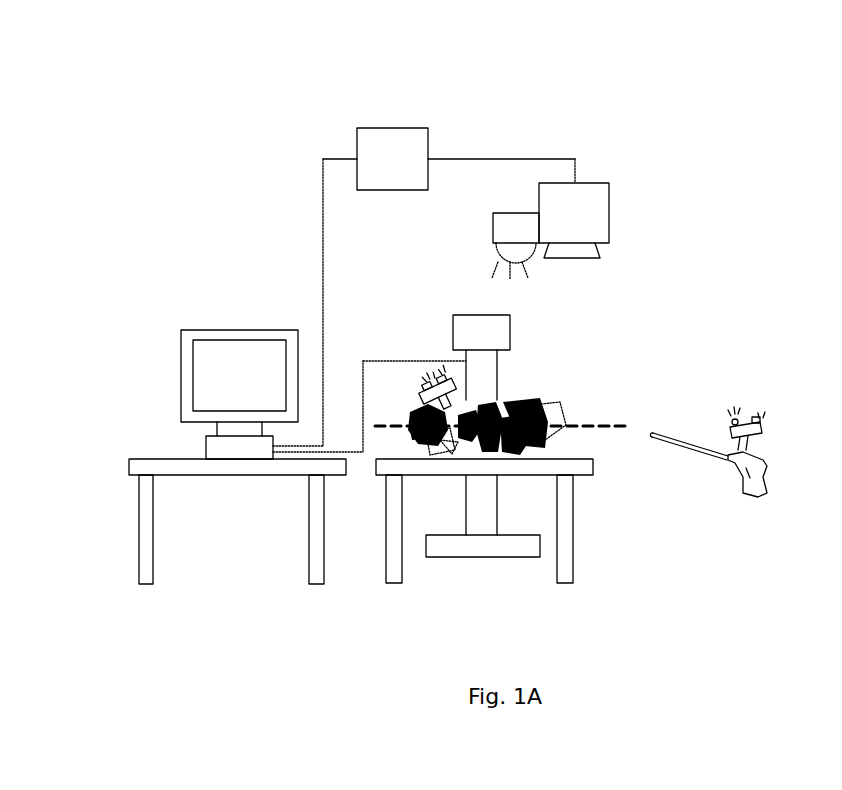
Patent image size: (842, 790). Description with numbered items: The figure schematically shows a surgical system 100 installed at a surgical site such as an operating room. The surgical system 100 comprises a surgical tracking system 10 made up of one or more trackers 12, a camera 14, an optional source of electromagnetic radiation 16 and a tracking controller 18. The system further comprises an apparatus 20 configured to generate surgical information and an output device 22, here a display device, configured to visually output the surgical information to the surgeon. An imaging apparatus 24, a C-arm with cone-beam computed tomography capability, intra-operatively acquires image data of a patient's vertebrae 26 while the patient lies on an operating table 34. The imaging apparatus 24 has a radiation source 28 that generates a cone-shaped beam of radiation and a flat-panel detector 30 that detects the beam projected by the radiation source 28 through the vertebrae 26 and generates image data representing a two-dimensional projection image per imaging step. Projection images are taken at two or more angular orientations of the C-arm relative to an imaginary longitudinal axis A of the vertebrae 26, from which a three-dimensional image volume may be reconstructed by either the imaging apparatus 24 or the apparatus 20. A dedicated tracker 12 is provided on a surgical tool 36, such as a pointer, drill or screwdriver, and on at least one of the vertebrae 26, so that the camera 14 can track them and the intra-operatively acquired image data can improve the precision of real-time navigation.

The surgical system 100 is at (211, 150).
The surgical tracking system 10 is at (468, 123).
The tracker 12 is at (433, 385).
The camera 14 is at (609, 217).
The source of electromagnetic radiation 16 is at (517, 232).
The tracking controller 18 is at (373, 153).
The apparatus 20 is at (205, 447).
The output device 22 is at (245, 353).
The imaging apparatus 24 is at (503, 372).
The vertebrae 26 is at (553, 418).
The radiation source 28 is at (510, 333).
The flat-panel detector 30 is at (472, 547).
The operating table 34 is at (383, 477).
The surgical tool 36 is at (733, 460).
The longitudinal axis A is at (617, 423).